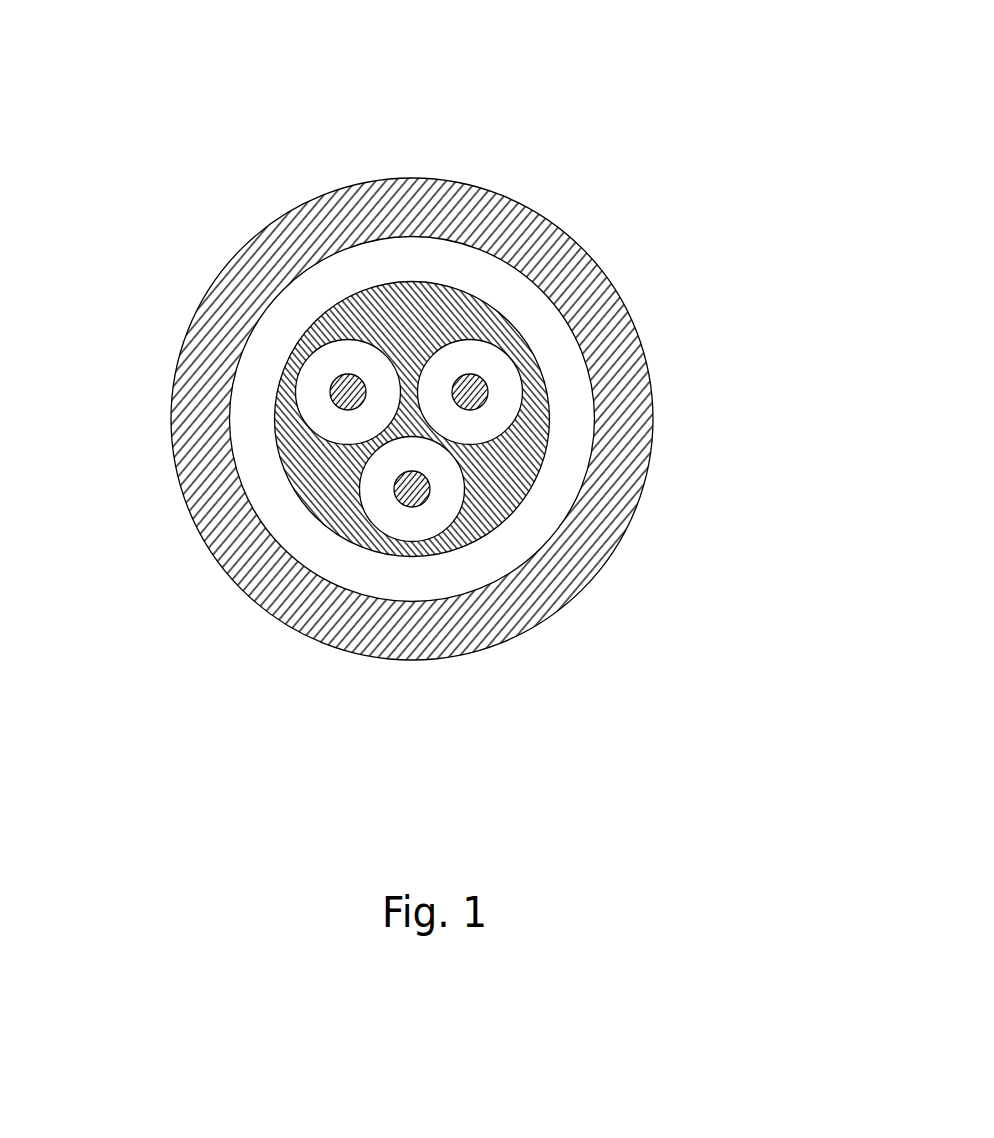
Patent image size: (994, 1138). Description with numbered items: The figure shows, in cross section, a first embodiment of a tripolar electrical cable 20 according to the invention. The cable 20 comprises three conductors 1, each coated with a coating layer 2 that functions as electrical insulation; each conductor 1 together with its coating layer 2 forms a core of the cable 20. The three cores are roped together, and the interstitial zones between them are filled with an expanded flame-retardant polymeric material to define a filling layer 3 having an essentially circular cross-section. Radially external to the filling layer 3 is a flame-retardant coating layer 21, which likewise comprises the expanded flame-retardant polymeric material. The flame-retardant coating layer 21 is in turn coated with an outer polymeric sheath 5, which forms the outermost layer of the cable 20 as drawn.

The electrical cable 20 is at (434, 403).
The conductor 1 is at (471, 390).
The coating layer 2 is at (505, 395).
The filling layer 3 is at (492, 480).
The flame-retardant coating layer 21 is at (518, 540).
The outer polymeric sheath 5 is at (487, 640).